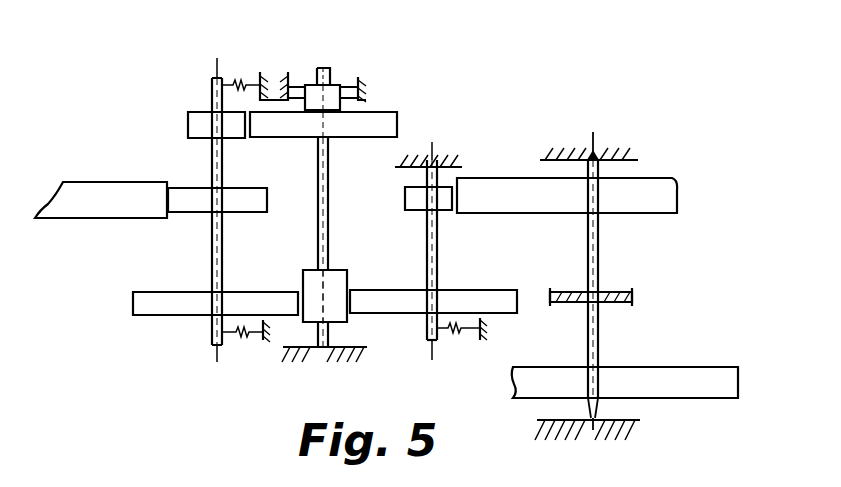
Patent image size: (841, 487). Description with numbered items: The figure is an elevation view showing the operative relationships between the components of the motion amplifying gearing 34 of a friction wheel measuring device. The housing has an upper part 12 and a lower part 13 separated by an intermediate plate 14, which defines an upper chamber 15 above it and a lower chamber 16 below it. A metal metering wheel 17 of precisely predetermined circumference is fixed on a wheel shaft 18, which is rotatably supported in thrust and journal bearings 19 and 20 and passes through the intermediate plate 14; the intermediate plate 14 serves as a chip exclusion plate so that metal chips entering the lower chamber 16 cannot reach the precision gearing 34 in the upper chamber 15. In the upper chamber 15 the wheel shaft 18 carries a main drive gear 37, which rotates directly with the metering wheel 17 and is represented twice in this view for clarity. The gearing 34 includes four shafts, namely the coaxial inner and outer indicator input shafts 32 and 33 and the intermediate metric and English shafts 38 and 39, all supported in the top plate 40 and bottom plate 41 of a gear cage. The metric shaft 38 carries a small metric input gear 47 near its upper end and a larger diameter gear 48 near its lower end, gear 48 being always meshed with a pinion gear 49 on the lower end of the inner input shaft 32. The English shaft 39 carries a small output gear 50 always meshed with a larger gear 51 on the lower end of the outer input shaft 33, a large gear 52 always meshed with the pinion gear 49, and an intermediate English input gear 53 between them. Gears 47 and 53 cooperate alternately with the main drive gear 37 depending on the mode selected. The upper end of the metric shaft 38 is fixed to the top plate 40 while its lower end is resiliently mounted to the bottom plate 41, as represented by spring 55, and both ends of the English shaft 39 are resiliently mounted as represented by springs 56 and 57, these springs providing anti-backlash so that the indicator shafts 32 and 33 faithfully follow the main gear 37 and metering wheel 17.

The upper part 12 is at (562, 155).
The lower part 13 is at (636, 428).
The intermediate plate 14 is at (625, 303).
The upper chamber 15 is at (665, 234).
The lower chamber 16 is at (700, 338).
The metering wheel 17 is at (740, 373).
The wheel shaft 18 is at (600, 266).
The bearing 19 is at (605, 158).
The bearing 20 is at (605, 418).
The inner indicator input shaft 32 is at (330, 72).
The outer indicator input shaft 33 is at (305, 88).
The motion amplifying gearing 34 is at (110, 158).
The main drive gear 37 is at (165, 160).
The metric shaft 38 is at (426, 228).
The English shaft 39 is at (224, 238).
The top plate 40 is at (268, 72).
The bottom plate 41 is at (267, 342).
The metric input gear 47 is at (405, 196).
The larger diameter gear 48 is at (536, 272).
The pinion gear 49 is at (349, 272).
The output gear 50 is at (188, 118).
The larger diameter gear 51 is at (254, 139).
The large diameter gear 52 is at (133, 296).
The English input gear 53 is at (296, 180).
The spring 55 is at (440, 336).
The spring 56 is at (239, 83).
The spring 57 is at (245, 338).